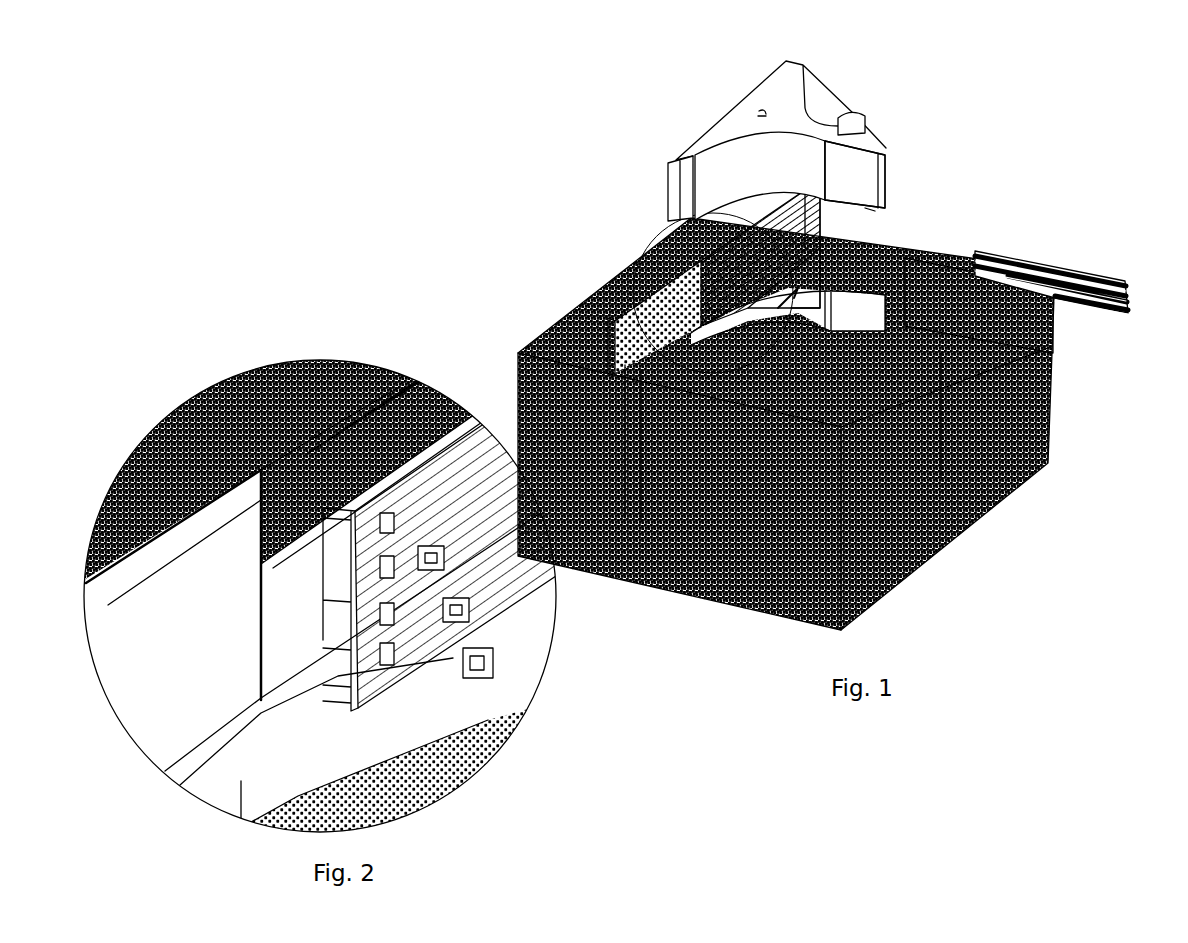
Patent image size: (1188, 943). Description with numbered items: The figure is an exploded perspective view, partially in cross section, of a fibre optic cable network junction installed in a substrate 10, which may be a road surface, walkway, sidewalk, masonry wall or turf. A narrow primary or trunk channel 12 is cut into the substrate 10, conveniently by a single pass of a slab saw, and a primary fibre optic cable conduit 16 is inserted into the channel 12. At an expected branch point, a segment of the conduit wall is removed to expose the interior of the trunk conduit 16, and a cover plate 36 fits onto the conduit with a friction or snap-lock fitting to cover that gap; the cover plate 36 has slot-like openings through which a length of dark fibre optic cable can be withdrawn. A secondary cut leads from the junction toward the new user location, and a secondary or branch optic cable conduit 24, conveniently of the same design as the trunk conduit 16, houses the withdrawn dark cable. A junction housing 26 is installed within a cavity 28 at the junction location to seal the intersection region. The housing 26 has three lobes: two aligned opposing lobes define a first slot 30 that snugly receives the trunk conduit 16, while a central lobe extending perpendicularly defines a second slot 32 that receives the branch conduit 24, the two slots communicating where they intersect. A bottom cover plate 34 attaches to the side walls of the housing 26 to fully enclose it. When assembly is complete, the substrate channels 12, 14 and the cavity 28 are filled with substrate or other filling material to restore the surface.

The substrate 10 is at (877, 587).
The primary or trunk channel 12 is at (648, 535).
The substrate channel 14 is at (970, 490).
The primary fibre optic cable conduit 16 is at (607, 308).
The secondary or branch optic cable conduit 24 is at (967, 243).
The junction housing 26 is at (712, 118).
The cavity 28 is at (880, 470).
The first slot 30 is at (787, 97).
The second slot 32 is at (880, 140).
The bottom cover plate 34 is at (850, 290).
The cover plate 36 is at (690, 235).